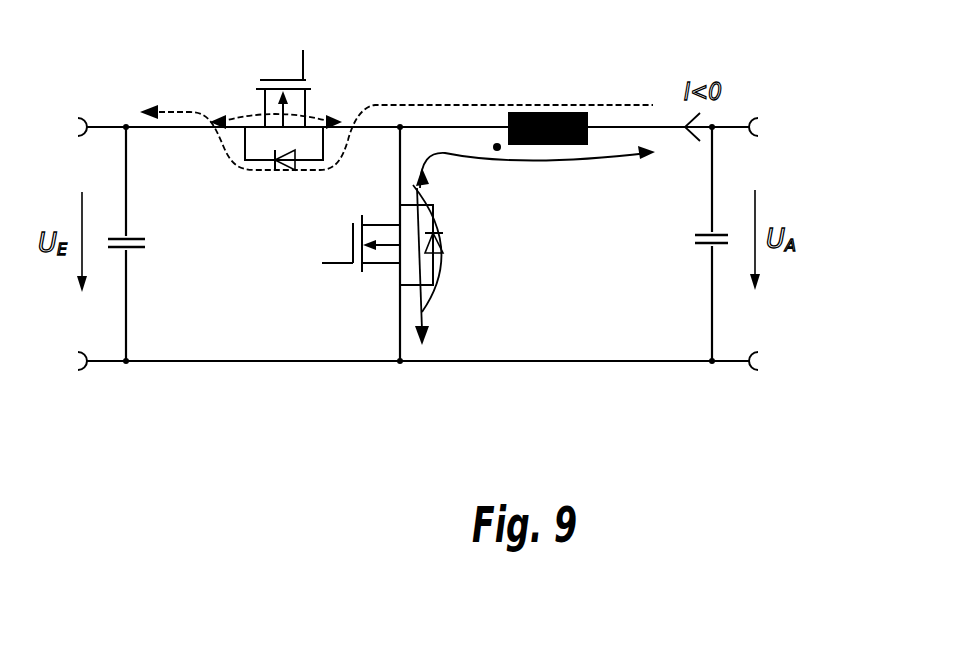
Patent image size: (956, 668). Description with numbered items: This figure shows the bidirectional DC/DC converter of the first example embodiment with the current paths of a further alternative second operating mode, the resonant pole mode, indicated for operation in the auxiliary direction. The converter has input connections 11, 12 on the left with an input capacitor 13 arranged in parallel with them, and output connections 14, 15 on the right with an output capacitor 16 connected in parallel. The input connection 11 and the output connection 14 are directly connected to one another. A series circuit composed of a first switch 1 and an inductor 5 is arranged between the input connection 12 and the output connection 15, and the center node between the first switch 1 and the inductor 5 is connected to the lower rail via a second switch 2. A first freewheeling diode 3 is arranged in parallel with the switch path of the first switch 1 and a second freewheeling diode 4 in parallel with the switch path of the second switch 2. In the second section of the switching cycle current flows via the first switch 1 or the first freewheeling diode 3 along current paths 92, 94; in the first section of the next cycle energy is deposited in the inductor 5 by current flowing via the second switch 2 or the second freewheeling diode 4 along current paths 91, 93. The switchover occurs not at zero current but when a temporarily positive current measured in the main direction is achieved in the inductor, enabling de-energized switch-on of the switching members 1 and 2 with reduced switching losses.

The first switching member 1 is at (287, 80).
The second switching member 2 is at (345, 265).
The first freewheeling diode 3 is at (283, 165).
The second freewheeling diode 4 is at (445, 255).
The inductor 5 is at (545, 112).
The input connection 11 is at (88, 365).
The input connection 12 is at (87, 120).
The input capacitor 13 is at (133, 237).
The output connection 14 is at (760, 370).
The output connection 15 is at (757, 118).
The output capacitor 16 is at (700, 248).
The current path 91 is at (470, 158).
The current path 92 is at (452, 105).
The current path 93 is at (445, 285).
The current path 94 is at (325, 117).